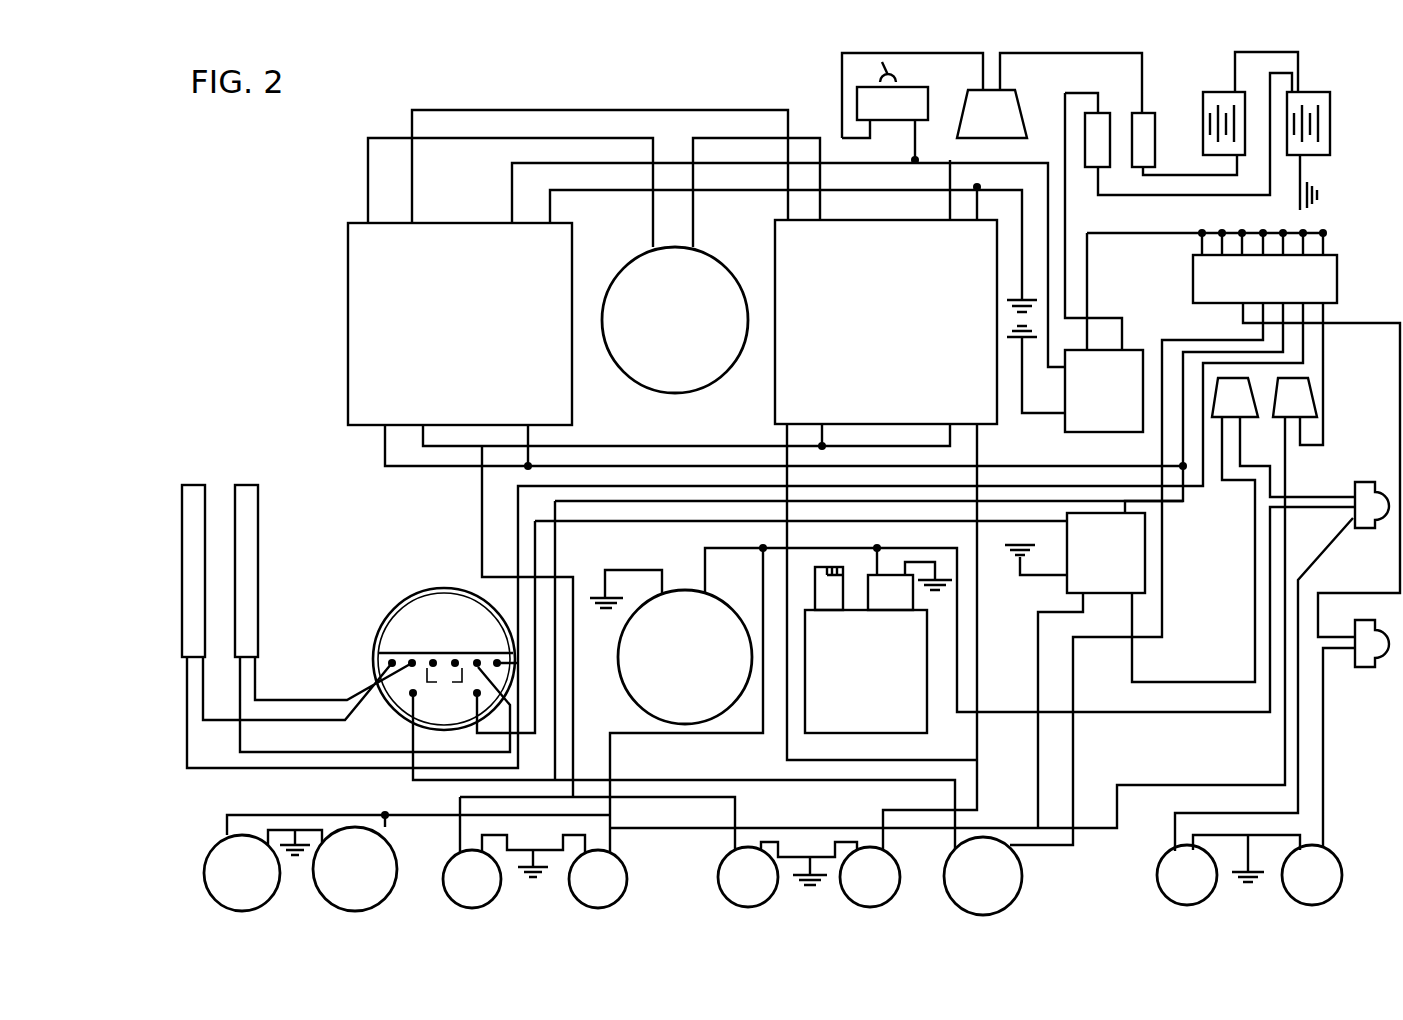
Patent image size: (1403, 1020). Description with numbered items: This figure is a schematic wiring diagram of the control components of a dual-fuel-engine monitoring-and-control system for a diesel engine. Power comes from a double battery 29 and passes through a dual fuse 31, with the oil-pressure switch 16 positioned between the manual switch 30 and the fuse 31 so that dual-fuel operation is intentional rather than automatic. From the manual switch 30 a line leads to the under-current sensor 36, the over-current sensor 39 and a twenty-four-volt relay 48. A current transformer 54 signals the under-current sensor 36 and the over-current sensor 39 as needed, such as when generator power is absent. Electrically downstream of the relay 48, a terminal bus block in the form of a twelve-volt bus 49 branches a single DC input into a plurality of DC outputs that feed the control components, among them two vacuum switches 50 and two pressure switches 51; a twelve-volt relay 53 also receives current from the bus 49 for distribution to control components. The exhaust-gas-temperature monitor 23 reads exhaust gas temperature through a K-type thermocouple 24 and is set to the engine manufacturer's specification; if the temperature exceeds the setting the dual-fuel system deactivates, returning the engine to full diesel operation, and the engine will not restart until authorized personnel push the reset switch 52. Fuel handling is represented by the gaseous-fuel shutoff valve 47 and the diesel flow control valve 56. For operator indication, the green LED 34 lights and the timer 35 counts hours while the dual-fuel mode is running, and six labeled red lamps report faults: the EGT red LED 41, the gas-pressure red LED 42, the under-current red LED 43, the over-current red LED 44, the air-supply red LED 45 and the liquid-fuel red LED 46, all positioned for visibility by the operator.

The oil-pressure switch 16 is at (1015, 90).
The exhaust-gas-temperature monitor 23 is at (442, 588).
The thermocouple 24 is at (248, 530).
The battery 29 is at (1317, 92).
The manual switch 30 is at (857, 88).
The fuse 31 is at (1143, 113).
The green LED 34 is at (352, 827).
The timer 35 is at (237, 835).
The under-current sensor 36 is at (460, 324).
The over-current sensor 39 is at (886, 322).
The EGT red LED 41 is at (480, 853).
The gas-pressure red LED 42 is at (626, 868).
The under-current red LED 43 is at (737, 851).
The over-current red LED 44 is at (870, 848).
The air-supply red LED 45 is at (1157, 872).
The liquid-fuel red LED 46 is at (1325, 850).
The gaseous-fuel shutoff valve 47 is at (685, 590).
The 24-volt relay 48 is at (1133, 350).
The 12-volt bus 49 is at (1337, 275).
The vacuum switches 50 is at (1365, 620).
The pressure switches 51 is at (1317, 392).
The exhaust gas temperature reset switch 52 is at (1022, 877).
The 12-volt relay 53 is at (1145, 558).
The current transformer 54 is at (675, 320).
The diesel flow control valve 56 is at (927, 672).